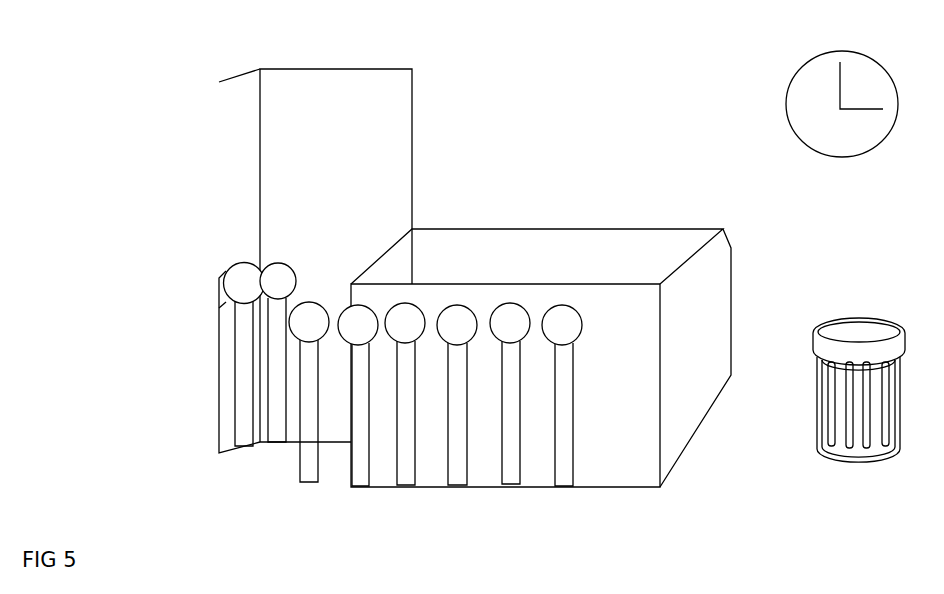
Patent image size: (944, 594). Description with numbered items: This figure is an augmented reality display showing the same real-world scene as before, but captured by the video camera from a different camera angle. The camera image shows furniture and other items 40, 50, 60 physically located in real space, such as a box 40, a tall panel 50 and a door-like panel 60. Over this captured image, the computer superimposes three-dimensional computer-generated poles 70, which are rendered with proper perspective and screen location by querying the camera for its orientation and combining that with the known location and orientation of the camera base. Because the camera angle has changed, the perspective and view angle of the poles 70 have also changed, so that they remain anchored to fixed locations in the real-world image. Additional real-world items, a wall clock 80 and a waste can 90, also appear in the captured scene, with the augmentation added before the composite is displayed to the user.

The furniture and other items 40 is at (540, 225).
The furniture and other items 50 is at (327, 64).
The furniture and other items 60 is at (242, 64).
The computer-generated poles 70 is at (313, 291).
The clock 80 is at (813, 53).
The trash can 90 is at (830, 314).